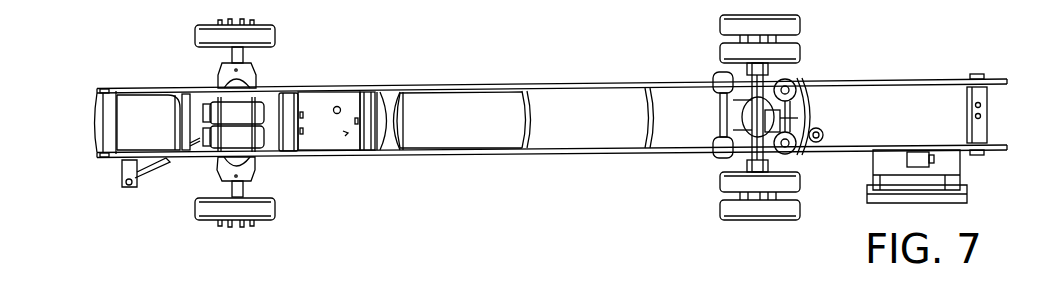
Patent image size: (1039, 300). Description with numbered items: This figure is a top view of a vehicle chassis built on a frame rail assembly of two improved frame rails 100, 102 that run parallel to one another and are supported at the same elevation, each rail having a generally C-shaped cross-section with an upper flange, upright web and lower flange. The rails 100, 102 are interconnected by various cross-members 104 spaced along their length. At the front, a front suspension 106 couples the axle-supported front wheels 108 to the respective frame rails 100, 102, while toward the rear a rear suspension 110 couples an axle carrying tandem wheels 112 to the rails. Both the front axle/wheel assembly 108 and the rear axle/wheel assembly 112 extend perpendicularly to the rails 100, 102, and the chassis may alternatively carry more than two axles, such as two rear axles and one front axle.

The frame rail 100 is at (551, 117).
The frame rail 102 is at (473, 70).
The cross-members 104 is at (650, 120).
The front suspension 106 is at (273, 183).
The front wheels 108 is at (258, 239).
The rear suspension 110 is at (709, 173).
The tandem wheels 112 is at (744, 231).